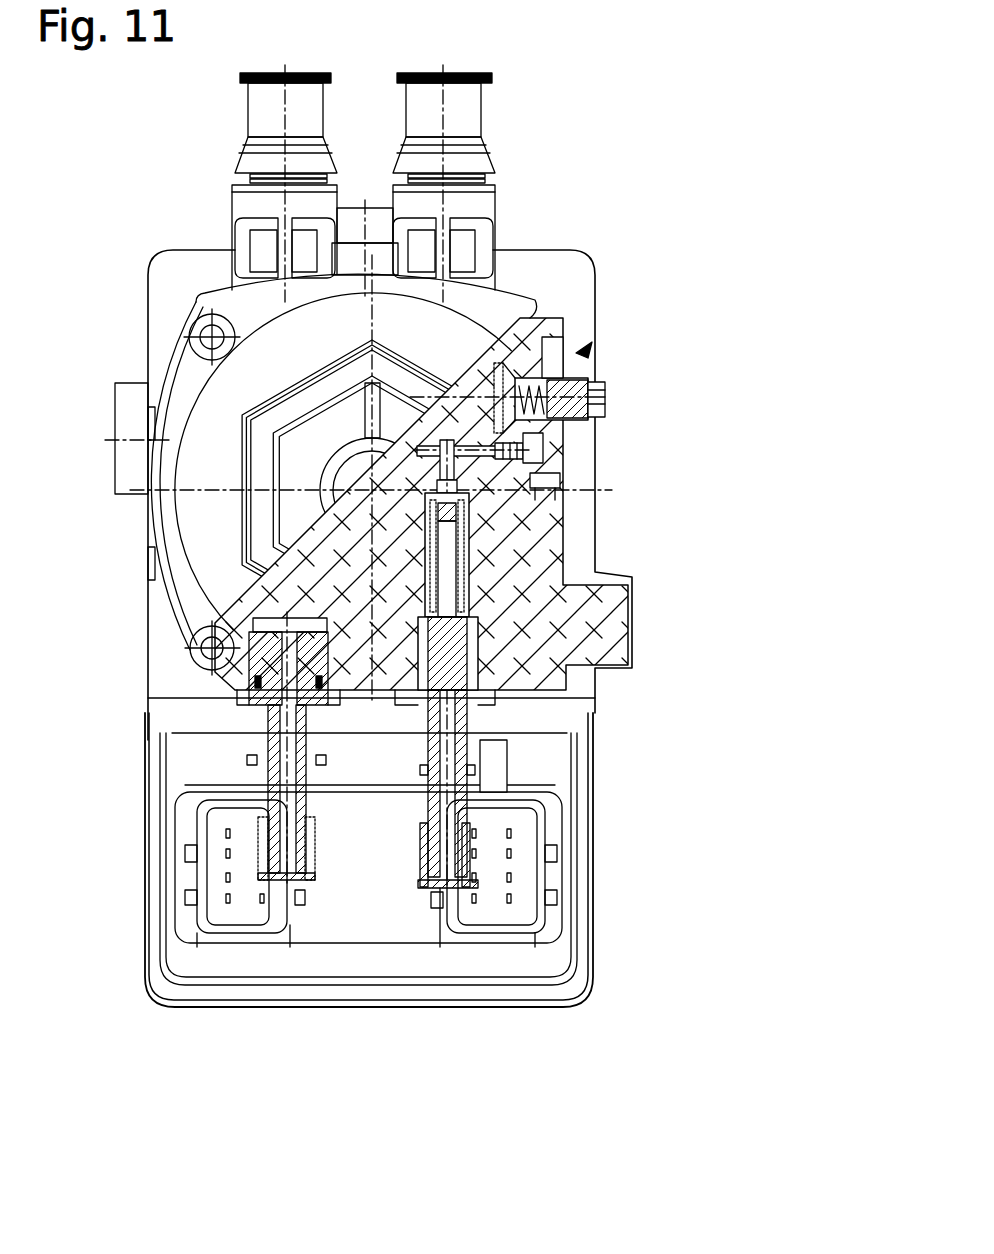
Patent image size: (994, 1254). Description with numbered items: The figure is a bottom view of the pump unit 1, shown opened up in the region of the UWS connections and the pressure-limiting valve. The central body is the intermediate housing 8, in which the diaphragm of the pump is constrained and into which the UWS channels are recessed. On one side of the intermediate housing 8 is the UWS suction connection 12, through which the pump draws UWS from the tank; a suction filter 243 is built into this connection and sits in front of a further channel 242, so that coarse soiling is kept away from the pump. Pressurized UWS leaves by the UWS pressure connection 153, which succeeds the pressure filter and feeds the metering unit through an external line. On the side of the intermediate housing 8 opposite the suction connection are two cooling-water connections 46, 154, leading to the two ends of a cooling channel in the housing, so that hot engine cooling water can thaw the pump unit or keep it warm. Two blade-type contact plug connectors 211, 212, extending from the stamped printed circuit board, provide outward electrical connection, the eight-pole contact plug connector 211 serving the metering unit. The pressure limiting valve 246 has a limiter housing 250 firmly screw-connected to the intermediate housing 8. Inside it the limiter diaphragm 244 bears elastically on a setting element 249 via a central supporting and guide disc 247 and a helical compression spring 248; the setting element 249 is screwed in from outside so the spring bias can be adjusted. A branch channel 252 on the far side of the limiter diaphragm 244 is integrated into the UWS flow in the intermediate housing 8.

The pump unit 1 is at (78, 630).
The intermediate housing 8 is at (527, 613).
The UWS suction connection 12 is at (488, 696).
The cooling-water connection 46 is at (470, 161).
The UWS pressure connection 153 is at (240, 712).
The cooling-water connection 154 is at (253, 157).
The contact plug connector 211 is at (231, 903).
The contact plug connector 212 is at (513, 900).
The further channel 242 is at (532, 487).
The suction filter 243 is at (440, 552).
The limiter diaphragm 244 is at (538, 387).
The pressure limiting valve 246 is at (584, 350).
The central supporting and guide disc 247 is at (527, 323).
The helical compression spring 248 is at (548, 363).
The setting element 249 is at (578, 397).
The limiter housing 250 is at (543, 447).
The branch channel 252 is at (403, 473).